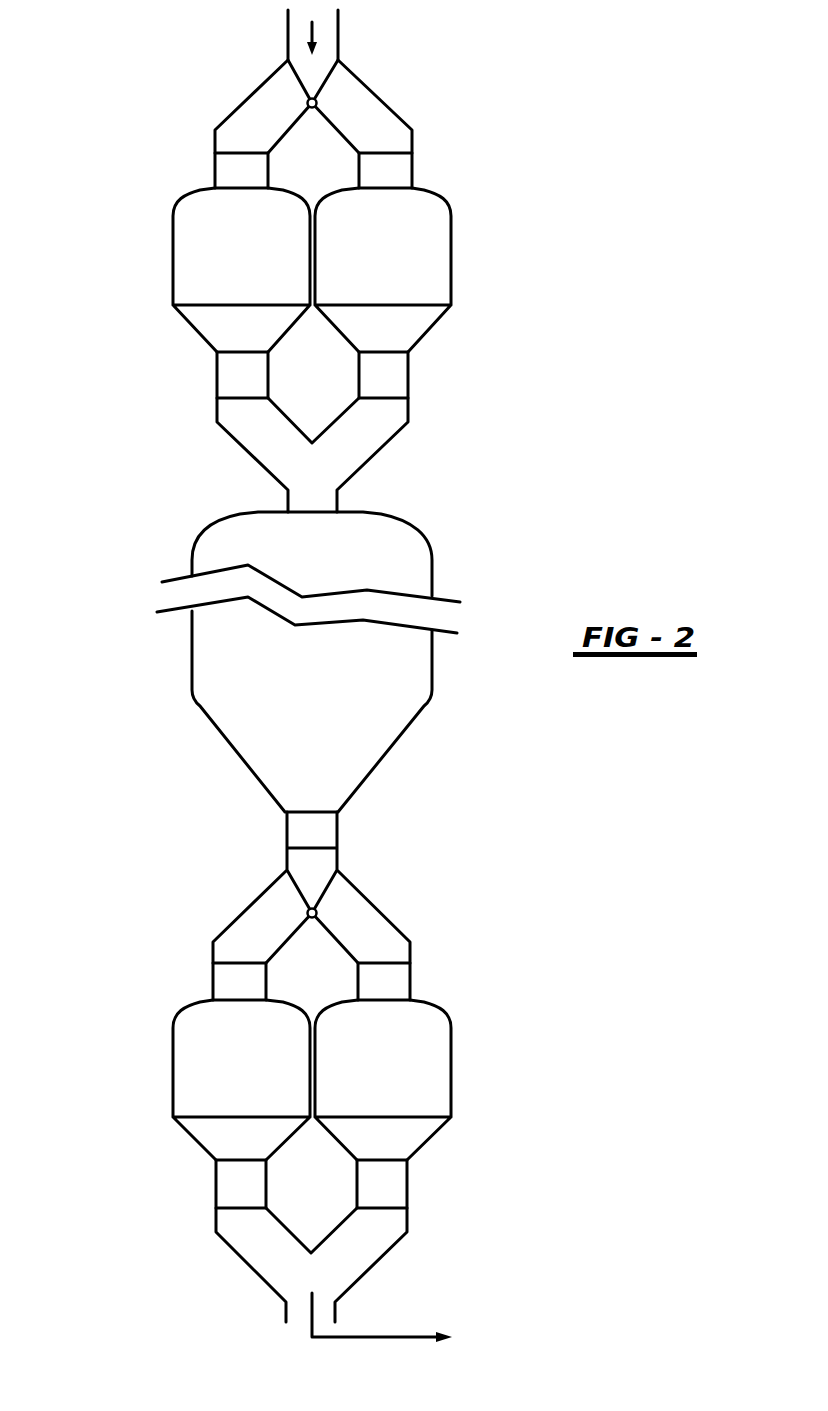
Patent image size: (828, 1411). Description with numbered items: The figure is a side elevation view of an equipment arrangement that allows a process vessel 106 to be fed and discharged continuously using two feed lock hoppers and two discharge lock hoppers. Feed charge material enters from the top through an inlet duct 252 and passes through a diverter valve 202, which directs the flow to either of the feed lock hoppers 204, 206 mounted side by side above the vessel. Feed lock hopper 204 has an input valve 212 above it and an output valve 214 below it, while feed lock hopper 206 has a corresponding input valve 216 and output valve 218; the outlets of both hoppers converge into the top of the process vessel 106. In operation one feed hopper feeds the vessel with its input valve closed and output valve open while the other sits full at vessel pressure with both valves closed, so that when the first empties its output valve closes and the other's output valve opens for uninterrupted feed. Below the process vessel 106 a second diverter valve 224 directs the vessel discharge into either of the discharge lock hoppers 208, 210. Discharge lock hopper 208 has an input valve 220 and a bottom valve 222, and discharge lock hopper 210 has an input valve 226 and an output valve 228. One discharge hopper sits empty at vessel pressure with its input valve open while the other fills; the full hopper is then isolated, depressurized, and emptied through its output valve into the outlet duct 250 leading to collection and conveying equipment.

The process vessel 106 is at (433, 690).
The diverter valve 202 is at (326, 78).
The feed lock hopper 204 is at (173, 213).
The feed lock hopper 206 is at (450, 207).
The discharge lock hopper 208 is at (173, 1015).
The discharge lock hopper 210 is at (452, 1013).
The input valve 212 is at (213, 167).
The output valve 214 is at (213, 385).
The input valve 216 is at (412, 168).
The output valve 218 is at (408, 372).
The input valve 220 is at (213, 980).
The bottom valve 222 is at (213, 1187).
The diverter valve 224 is at (323, 888).
The input valve 226 is at (412, 972).
The output valve 228 is at (409, 1182).
The outlet duct 250 is at (320, 1315).
The inlet duct 252 is at (338, 33).